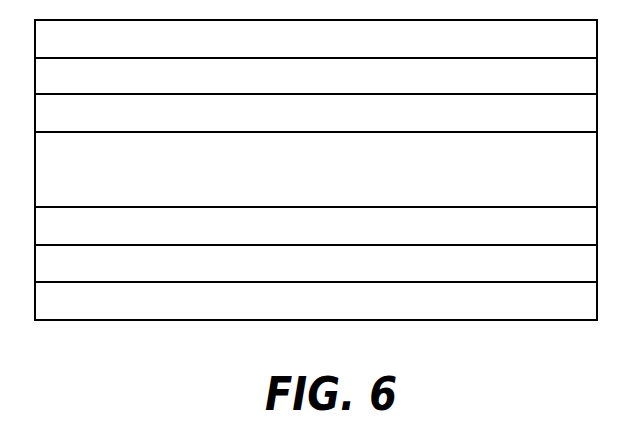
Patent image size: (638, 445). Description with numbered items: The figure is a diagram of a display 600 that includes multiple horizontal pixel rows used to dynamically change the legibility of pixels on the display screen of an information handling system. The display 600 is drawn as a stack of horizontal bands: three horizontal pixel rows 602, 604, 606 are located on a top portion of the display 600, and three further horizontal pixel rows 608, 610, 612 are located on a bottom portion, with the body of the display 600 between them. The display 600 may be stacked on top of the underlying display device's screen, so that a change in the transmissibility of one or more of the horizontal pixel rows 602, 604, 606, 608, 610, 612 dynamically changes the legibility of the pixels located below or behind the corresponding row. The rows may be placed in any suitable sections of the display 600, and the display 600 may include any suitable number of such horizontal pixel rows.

The display 600 is at (338, 180).
The horizontal pixel row 602 is at (299, 50).
The horizontal pixel row 604 is at (299, 86).
The horizontal pixel row 606 is at (299, 122).
The horizontal pixel row 608 is at (299, 236).
The horizontal pixel row 610 is at (299, 272).
The horizontal pixel row 612 is at (299, 310).